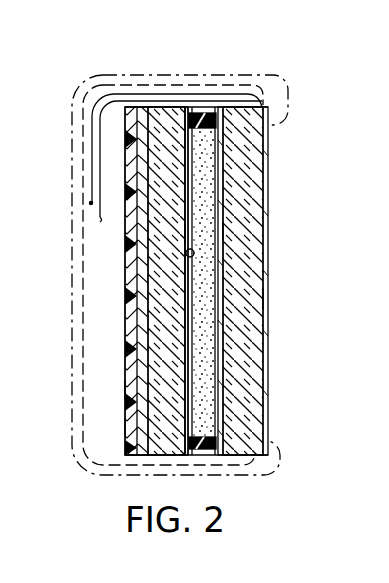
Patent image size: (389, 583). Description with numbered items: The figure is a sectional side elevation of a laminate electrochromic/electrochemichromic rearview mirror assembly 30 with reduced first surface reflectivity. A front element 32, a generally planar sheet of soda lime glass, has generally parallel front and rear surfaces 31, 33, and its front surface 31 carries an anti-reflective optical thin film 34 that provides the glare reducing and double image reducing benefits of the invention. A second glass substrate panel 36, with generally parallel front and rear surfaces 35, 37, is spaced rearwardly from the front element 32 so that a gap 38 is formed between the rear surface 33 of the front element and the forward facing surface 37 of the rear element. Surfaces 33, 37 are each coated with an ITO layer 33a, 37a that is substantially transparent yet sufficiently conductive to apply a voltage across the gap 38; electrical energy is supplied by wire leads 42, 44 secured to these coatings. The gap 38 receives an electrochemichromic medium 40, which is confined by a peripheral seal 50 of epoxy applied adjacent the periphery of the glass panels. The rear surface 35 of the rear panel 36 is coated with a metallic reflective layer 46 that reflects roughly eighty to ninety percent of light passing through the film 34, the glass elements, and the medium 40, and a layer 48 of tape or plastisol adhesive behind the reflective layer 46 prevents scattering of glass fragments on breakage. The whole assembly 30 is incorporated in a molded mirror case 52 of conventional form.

The electrochromic/electrochemichromic rearview mirror assembly 30 is at (322, 77).
The front surface 31 is at (268, 190).
The front element 32 is at (250, 275).
The rear surface 33 is at (214, 173).
The ITO layer 33a is at (226, 231).
The anti-reflective optical thin film 34 is at (265, 298).
The rear surface 35 is at (125, 367).
The second glass substrate panel 36 is at (125, 313).
The front surface 37 is at (185, 257).
The ITO layer 37a is at (137, 234).
The gap 38 is at (224, 328).
The electrochemichromic medium 40 is at (200, 364).
The wire lead 42 is at (100, 152).
The wire lead 44 is at (100, 185).
The reflective layer 46 is at (125, 390).
The tape or adhesive layer 48 is at (125, 426).
The peripheral seal 50 is at (200, 112).
The mirror case 52 is at (141, 73).